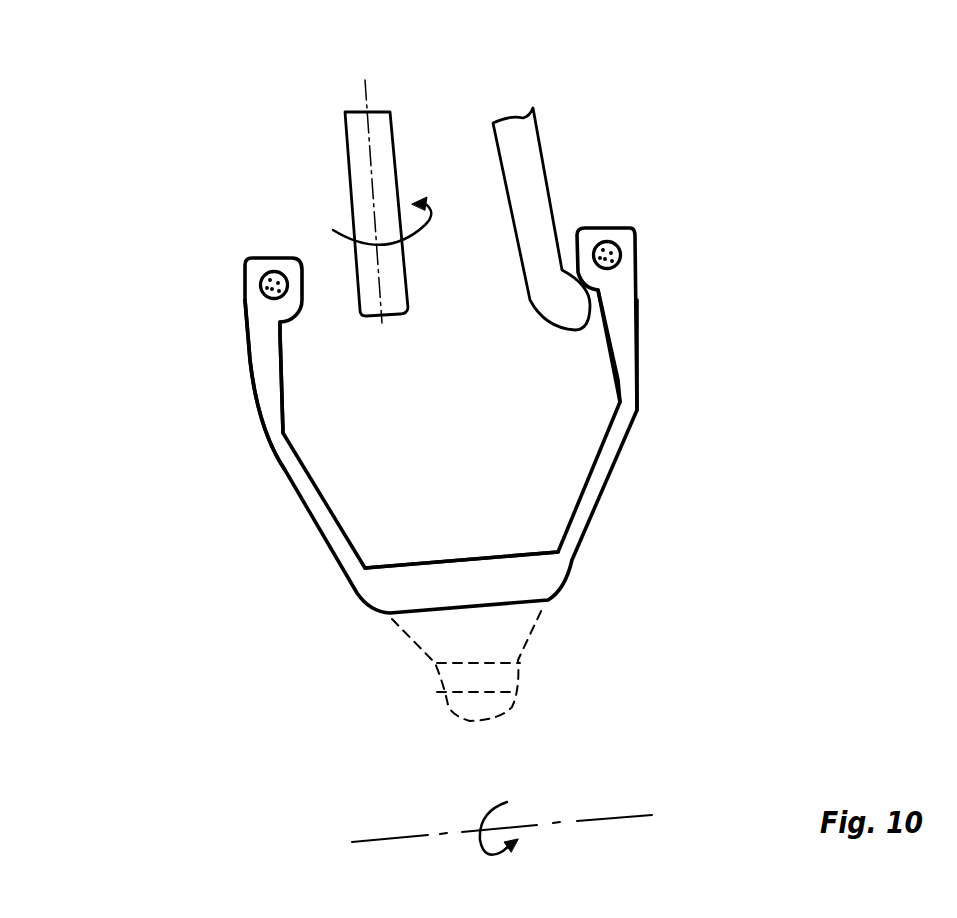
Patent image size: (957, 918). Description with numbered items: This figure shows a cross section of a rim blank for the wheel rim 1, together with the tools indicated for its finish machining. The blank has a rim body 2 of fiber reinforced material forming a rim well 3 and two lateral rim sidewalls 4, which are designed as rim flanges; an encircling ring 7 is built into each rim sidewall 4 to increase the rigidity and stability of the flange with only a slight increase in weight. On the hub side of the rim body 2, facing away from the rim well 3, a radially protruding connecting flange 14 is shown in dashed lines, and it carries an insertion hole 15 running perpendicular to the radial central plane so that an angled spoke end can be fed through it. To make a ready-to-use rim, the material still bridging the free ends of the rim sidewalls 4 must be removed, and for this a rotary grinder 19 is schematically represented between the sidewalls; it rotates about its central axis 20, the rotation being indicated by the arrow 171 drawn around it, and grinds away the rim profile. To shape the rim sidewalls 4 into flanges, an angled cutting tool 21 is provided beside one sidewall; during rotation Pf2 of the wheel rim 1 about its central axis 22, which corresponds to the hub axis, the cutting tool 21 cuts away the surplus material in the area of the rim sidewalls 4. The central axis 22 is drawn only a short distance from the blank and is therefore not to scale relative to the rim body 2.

The wheel rim 1 is at (178, 262).
The rim body 2 is at (338, 604).
The rim well 3 is at (459, 553).
The rim sidewalls 4 is at (256, 334).
The encircling ring 7 is at (271, 272).
The connecting flanges 14 is at (458, 720).
The insertion hole 15 is at (452, 678).
The rotary grinder 19 is at (354, 139).
The central axis 20 is at (368, 90).
The angled cutting tool 21 is at (558, 318).
The central axis 22 is at (628, 818).
The rotation direction arrow 171 is at (400, 221).
The rotation direction arrow Pf2 is at (512, 839).